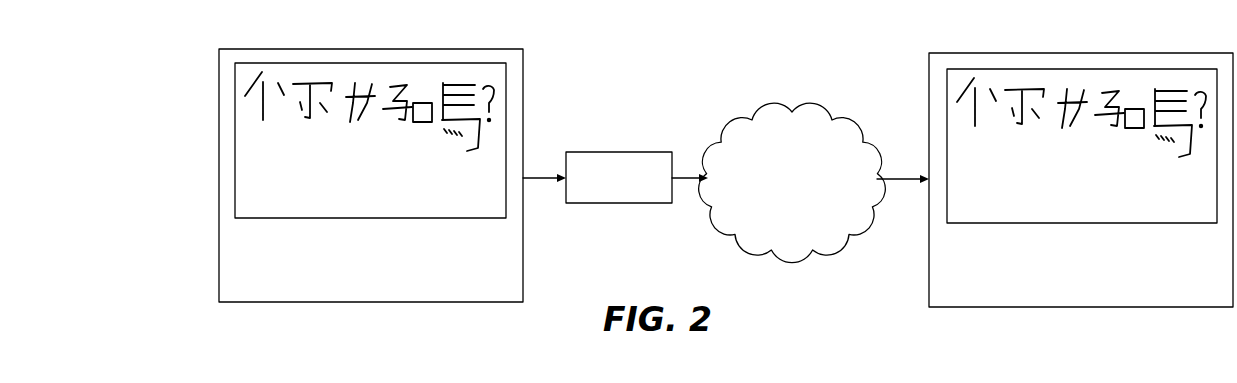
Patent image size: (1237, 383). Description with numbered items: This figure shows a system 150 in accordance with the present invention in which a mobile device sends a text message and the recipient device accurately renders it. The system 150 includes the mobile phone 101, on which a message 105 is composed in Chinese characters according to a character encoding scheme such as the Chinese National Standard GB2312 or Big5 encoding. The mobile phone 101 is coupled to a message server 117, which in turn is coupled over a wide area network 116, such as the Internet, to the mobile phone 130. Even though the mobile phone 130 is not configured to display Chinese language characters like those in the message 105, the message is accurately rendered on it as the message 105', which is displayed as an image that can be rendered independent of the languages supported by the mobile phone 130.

The system 150 is at (713, 54).
The mobile phone 101 is at (219, 247).
The message 105 is at (370, 140).
The message server 117 is at (635, 191).
The wide area network 116 is at (841, 116).
The mobile phone 130 is at (929, 280).
The message 105' is at (1082, 146).